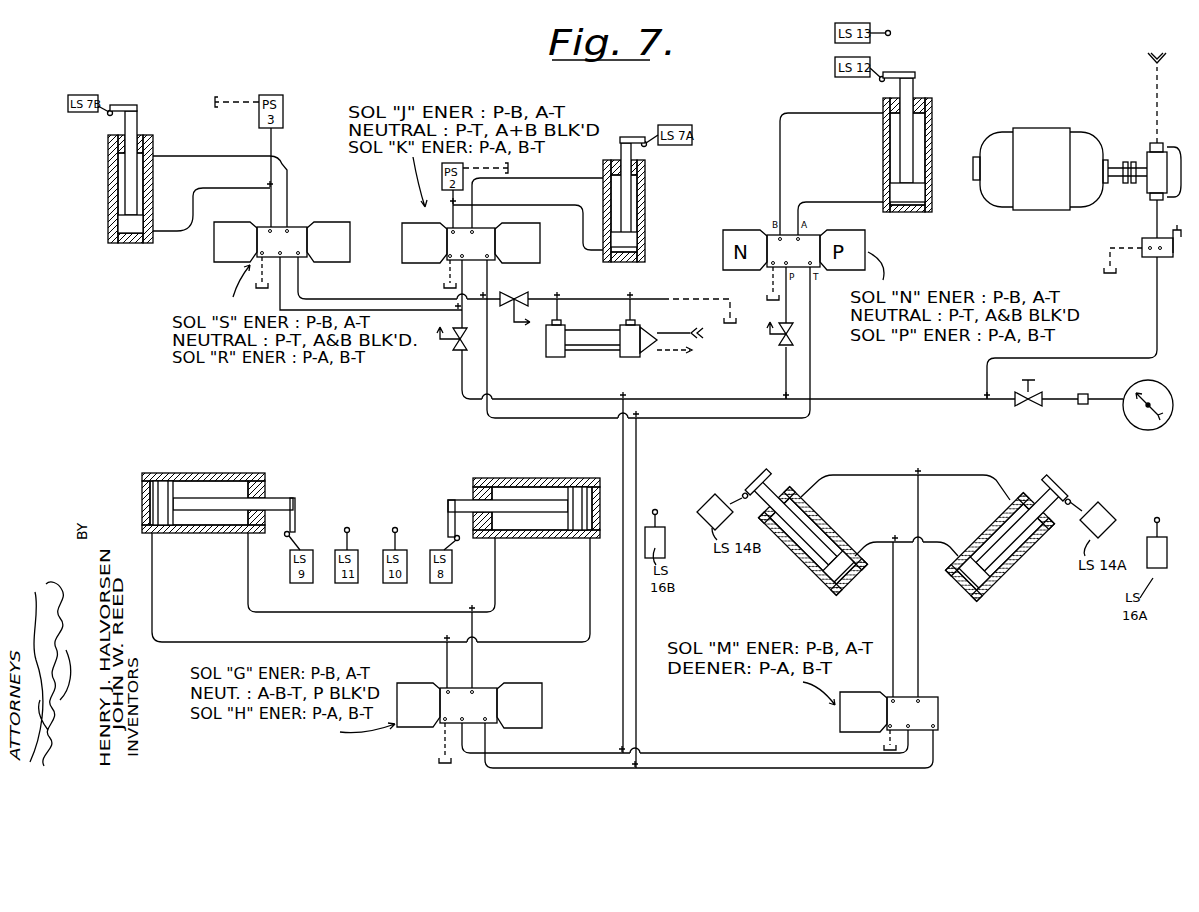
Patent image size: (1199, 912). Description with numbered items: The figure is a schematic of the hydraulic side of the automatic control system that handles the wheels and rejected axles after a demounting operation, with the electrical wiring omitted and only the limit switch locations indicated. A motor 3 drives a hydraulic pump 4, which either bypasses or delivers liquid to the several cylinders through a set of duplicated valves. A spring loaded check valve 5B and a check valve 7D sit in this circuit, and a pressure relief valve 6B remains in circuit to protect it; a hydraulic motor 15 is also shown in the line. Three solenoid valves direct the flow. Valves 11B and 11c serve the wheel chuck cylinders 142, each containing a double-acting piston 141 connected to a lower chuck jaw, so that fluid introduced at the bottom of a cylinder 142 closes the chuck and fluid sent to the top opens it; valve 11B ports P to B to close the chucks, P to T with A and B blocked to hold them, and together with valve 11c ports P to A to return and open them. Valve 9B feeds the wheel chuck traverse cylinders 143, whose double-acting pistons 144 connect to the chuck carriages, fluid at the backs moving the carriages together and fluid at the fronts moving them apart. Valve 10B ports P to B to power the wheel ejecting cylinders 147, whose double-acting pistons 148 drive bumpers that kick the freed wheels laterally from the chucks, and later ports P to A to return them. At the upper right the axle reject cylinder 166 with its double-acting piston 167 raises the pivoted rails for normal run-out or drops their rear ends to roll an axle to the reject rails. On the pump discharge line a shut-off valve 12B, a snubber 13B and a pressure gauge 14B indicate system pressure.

The motor 3 is at (1041, 135).
The hydraulic pump 4 is at (1148, 160).
The spring loaded check valve 5B is at (517, 297).
The pressure relief valve 6B is at (1143, 238).
The check valve 7D is at (453, 347).
The valve 9B is at (540, 700).
The valve 10B is at (840, 722).
The valve 11B is at (405, 225).
The valve 11c is at (351, 222).
The shut-off valve 12B is at (1025, 410).
The snubber 13B is at (1083, 410).
The pressure gauge 14B is at (1142, 428).
The hydraulic motor 15 is at (578, 347).
The double-acting piston 141 is at (125, 221).
The wheel chuck cylinder 142 is at (153, 142).
The wheel chuck traverse cylinder 143 is at (228, 475).
The double-acting piston 144 is at (167, 482).
The wheel ejecting cylinder 147 is at (792, 553).
The double-acting piston 148 is at (830, 573).
The axle reject cylinder 166 is at (932, 104).
The double-acting piston 167 is at (913, 193).